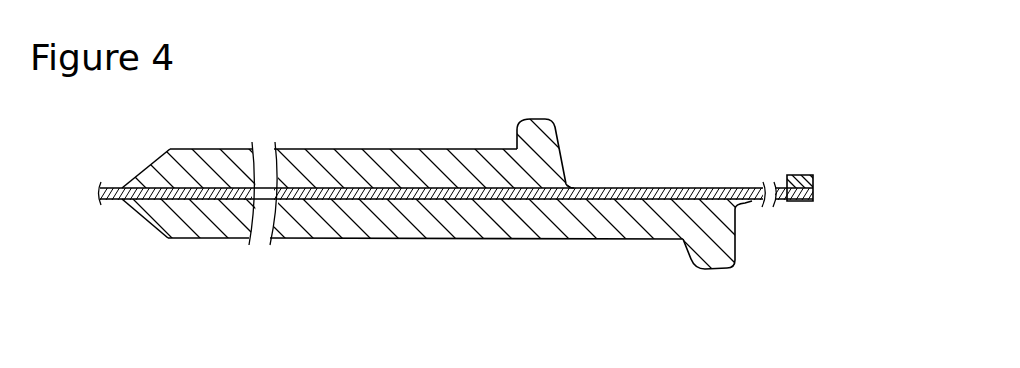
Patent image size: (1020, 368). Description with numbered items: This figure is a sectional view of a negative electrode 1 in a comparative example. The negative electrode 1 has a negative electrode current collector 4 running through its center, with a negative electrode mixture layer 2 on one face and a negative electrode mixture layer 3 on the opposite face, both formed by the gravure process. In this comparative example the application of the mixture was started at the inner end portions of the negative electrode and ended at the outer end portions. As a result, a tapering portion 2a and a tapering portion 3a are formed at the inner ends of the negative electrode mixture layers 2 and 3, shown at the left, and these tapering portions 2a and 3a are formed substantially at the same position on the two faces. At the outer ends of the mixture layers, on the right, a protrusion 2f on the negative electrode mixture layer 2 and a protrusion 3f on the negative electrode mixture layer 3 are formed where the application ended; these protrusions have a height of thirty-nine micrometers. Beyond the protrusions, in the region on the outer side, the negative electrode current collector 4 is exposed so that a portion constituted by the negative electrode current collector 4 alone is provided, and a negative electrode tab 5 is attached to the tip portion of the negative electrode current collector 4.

The negative electrode 1 is at (458, 68).
The negative electrode mixture layer 2 is at (383, 157).
The tapering portion 2a is at (162, 155).
The protrusion 2f is at (548, 117).
The negative electrode mixture layer 3 is at (370, 222).
The tapering portion 3a is at (150, 223).
The protrusion 3f is at (718, 268).
The negative electrode current collector 4 is at (663, 185).
The negative electrode tab 5 is at (802, 172).